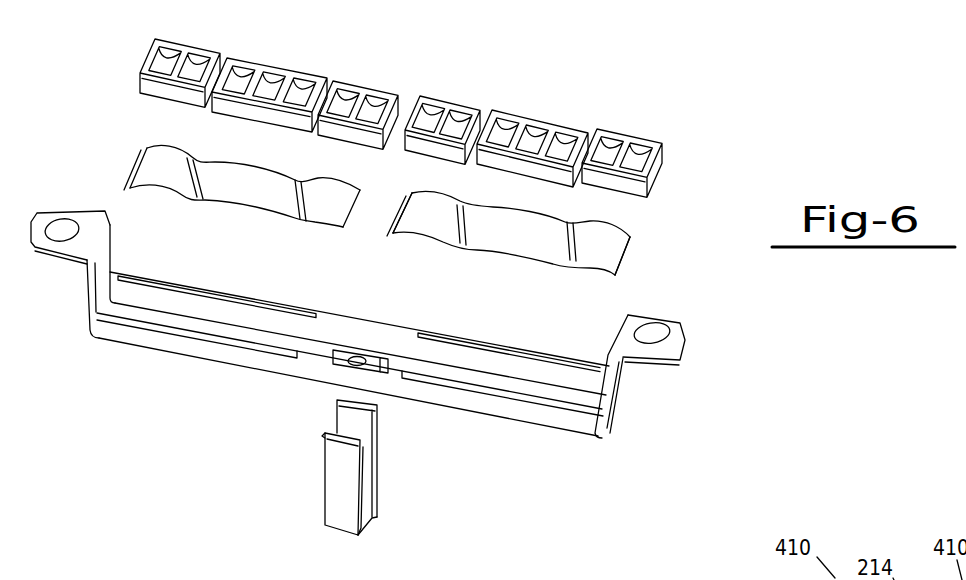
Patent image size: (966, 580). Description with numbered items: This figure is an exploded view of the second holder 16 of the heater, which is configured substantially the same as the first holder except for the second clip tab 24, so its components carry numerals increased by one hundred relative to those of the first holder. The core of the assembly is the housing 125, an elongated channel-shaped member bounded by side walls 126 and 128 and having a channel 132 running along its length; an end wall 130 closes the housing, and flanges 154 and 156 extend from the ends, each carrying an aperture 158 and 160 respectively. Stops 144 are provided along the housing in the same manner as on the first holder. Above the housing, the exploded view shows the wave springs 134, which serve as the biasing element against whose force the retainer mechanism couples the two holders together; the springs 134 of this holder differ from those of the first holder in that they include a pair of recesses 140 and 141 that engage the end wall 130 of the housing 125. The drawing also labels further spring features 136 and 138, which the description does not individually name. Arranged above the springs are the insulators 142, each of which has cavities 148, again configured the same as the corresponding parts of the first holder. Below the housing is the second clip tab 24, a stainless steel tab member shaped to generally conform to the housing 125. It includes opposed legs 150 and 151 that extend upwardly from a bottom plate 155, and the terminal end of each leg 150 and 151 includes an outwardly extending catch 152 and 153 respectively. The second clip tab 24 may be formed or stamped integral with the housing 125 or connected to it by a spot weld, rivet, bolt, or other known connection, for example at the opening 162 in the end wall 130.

The second holder 16 is at (604, 450).
The second clip tab 24 is at (392, 512).
The housing 125 is at (640, 402).
The side wall 126 is at (128, 343).
The side wall 128 is at (350, 328).
The end wall 130 is at (177, 296).
The channel 132 is at (250, 322).
The wave springs 134 is at (148, 164).
The strip end portion 136 is at (625, 258).
The strip end portion 138 is at (402, 206).
The recess 140 is at (480, 195).
The recess 141 is at (577, 226).
The insulators 142 is at (279, 52).
The stops 144 is at (236, 297).
The cavities 148 is at (300, 78).
The leg 150 is at (330, 490).
The leg 151 is at (370, 472).
The catch 152 is at (321, 434).
The catch 153 is at (383, 413).
The flange 154 is at (645, 321).
The bottom plate 155 is at (374, 522).
The flange 156 is at (92, 222).
The aperture 158 is at (672, 337).
The aperture 160 is at (62, 238).
The opening 162 is at (385, 357).